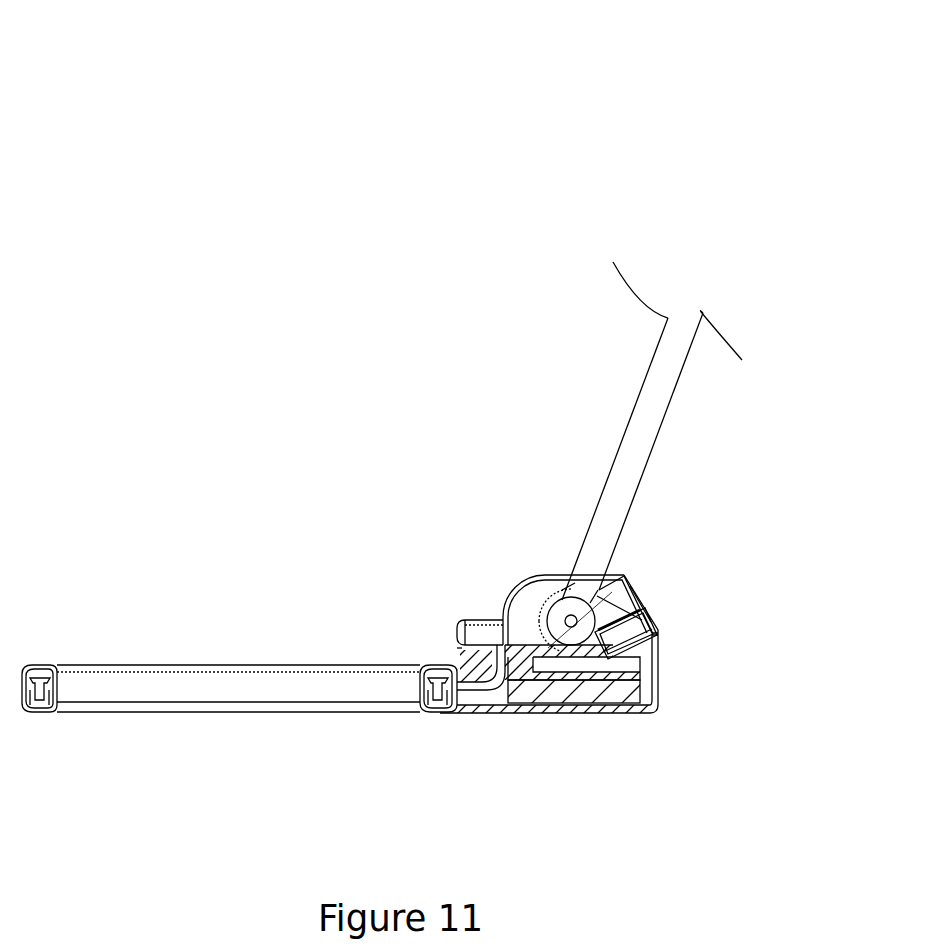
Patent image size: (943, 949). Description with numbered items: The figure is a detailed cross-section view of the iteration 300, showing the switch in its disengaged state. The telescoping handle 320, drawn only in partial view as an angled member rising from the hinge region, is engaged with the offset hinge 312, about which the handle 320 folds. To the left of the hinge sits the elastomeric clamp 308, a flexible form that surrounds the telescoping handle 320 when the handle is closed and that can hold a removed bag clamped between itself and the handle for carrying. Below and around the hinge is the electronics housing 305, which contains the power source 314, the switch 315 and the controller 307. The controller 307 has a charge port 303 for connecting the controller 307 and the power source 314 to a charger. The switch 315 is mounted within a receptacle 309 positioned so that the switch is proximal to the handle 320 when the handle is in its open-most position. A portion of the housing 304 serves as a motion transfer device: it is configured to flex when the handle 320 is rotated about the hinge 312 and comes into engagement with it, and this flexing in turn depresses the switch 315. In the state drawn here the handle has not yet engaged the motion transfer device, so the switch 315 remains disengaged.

The iteration 300 is at (116, 56).
The charge port 303 is at (672, 677).
The housing portion 304 is at (620, 599).
The electronics housing 305 is at (527, 580).
The controller 307 is at (636, 672).
The elastomeric clamp 308 is at (482, 632).
The receptacle 309 is at (662, 611).
The offset hinge 312 is at (570, 616).
The power source 314 is at (598, 695).
The switch 315 is at (640, 636).
The telescoping handle 320 is at (653, 405).